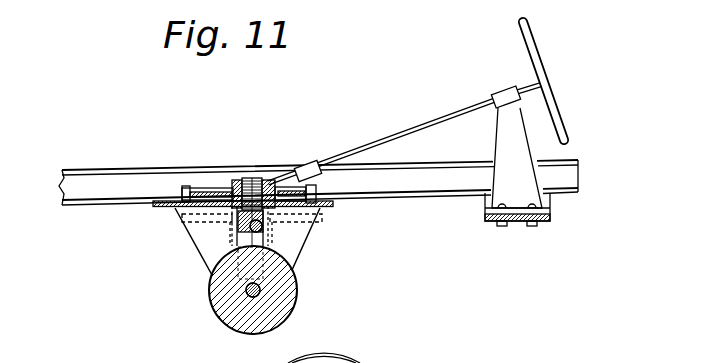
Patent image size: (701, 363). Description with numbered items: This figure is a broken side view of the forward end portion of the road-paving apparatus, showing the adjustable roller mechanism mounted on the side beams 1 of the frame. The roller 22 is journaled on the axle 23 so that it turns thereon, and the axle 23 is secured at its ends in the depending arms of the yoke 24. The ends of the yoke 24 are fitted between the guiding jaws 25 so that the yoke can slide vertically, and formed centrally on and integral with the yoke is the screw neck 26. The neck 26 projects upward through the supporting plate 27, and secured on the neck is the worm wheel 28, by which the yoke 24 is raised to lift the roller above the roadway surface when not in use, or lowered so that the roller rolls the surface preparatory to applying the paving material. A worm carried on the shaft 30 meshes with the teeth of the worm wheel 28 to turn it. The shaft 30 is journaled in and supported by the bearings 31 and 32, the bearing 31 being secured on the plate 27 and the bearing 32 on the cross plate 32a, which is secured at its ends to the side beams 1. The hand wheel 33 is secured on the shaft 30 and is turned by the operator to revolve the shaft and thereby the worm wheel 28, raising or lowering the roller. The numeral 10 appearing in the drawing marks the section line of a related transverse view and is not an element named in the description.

The side beams 1 is at (100, 185).
The adjusting screw shaft 10 is at (249, 178).
The roller 22 is at (288, 308).
The axle 23 is at (246, 291).
The yoke 24 is at (266, 228).
The guiding jaws 25 is at (200, 247).
The screw neck 26 is at (247, 180).
The supporting plate 27 is at (333, 207).
The worm wheel 28 is at (188, 190).
The shaft 30 is at (391, 137).
The bearing 31 is at (307, 164).
The bearing 32 is at (498, 94).
The cross plate 32a is at (521, 222).
The hand wheel 33 is at (542, 67).